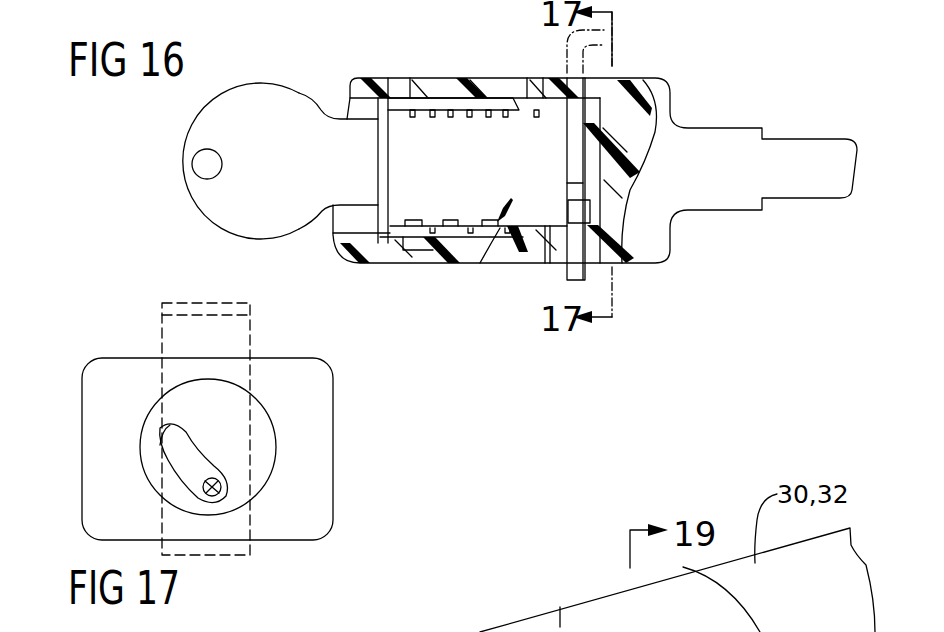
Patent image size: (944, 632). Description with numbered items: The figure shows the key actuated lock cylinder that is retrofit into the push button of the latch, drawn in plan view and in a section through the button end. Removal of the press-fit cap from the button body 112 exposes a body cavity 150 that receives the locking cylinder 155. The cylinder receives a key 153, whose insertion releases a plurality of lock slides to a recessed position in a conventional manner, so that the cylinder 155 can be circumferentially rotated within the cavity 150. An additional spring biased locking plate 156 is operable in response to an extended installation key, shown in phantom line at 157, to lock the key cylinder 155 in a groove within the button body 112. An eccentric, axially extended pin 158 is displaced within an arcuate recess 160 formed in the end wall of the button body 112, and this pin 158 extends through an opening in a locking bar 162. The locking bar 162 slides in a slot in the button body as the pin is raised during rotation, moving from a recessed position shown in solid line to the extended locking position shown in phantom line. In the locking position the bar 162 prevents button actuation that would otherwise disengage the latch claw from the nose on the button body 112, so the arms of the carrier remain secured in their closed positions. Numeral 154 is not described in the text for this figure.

In FIG. 16, the push button body 112 is at (484, 80).
In FIG. 16, the body cavity 150 is at (280, 145).
In FIG. 16, the key 153 is at (283, 106).
In FIG. 16, the tumbler pins 154 is at (447, 245).
In FIG. 16, the lock cylinder 155 is at (482, 263).
In FIG. 16, the spring biased locking plate 156 is at (527, 265).
In FIG. 16, the extended installation key 157 is at (547, 118).
In FIG. 16, the eccentric axially extended pin 158 is at (583, 213).
In FIG. 17, the eccentric axially extended pin 158 is at (222, 484).
In FIG. 17, the arcuate recess 160 is at (165, 440).
In FIG. 16, the locking bar 162 is at (567, 280).
In FIG. 17, the locking bar 162 is at (162, 341).